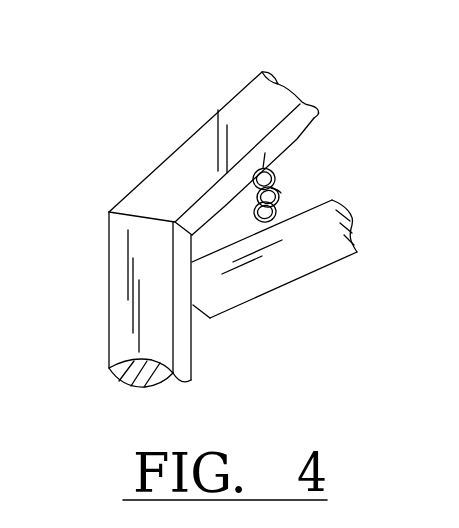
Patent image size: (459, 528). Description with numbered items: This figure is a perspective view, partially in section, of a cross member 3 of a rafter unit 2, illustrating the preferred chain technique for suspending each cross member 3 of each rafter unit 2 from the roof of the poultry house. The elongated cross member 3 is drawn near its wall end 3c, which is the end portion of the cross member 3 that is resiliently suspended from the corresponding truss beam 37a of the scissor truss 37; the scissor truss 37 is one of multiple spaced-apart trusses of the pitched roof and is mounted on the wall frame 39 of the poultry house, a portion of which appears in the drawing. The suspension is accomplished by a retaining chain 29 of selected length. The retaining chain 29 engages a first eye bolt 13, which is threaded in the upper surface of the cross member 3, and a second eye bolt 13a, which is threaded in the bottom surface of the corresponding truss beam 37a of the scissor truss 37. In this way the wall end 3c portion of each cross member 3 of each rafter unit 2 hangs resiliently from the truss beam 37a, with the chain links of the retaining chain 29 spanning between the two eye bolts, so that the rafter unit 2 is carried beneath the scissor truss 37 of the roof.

The rafter unit 2 is at (352, 258).
The cross member 3 is at (272, 280).
The wall end 3c is at (192, 308).
The first eye bolt 13 is at (278, 208).
The second eye bolt 13a is at (276, 173).
The retaining chain 29 is at (284, 190).
The scissor truss 37 is at (178, 148).
The truss beam 37a is at (253, 107).
The wall frame 39 is at (114, 264).